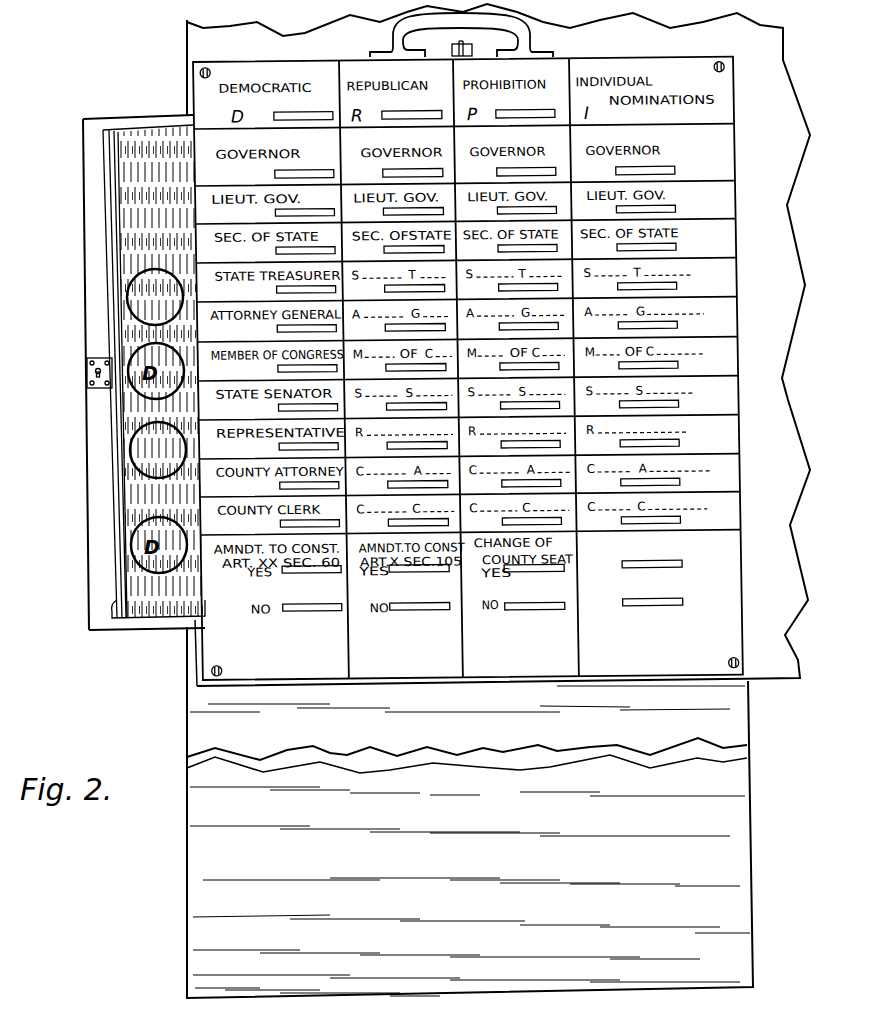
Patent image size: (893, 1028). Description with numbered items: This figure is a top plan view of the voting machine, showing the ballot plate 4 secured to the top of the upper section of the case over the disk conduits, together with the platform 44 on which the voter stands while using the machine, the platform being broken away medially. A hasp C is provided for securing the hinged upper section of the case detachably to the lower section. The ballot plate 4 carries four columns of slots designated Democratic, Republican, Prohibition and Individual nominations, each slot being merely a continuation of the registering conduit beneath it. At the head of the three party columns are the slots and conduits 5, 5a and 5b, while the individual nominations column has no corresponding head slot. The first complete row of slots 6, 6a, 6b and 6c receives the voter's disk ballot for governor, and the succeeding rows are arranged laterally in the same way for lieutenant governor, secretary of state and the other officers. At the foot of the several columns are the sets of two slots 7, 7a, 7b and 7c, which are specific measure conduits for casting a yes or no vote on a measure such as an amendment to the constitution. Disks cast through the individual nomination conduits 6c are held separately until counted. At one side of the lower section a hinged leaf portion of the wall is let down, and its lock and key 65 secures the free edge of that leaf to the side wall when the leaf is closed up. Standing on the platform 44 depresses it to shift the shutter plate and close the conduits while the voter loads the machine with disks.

The ballot plate 4 is at (205, 107).
The party slot and conduit 5 is at (297, 115).
The party slot and conduit 5a is at (406, 115).
The party slot and conduit 5b is at (518, 115).
The slot and conduit 6 is at (273, 176).
The slot and conduit 6a is at (381, 176).
The slot and conduit 6b is at (495, 176).
The individual nomination slot and conduit 6c is at (614, 176).
The specific measure slots 7 is at (312, 589).
The specific measure slots 7a is at (419, 588).
The specific measure slots 7b is at (534, 587).
The specific measure slots 7c is at (652, 583).
The platform 44 is at (470, 812).
The lock and key 65 is at (87, 377).
The hasp C is at (473, 55).